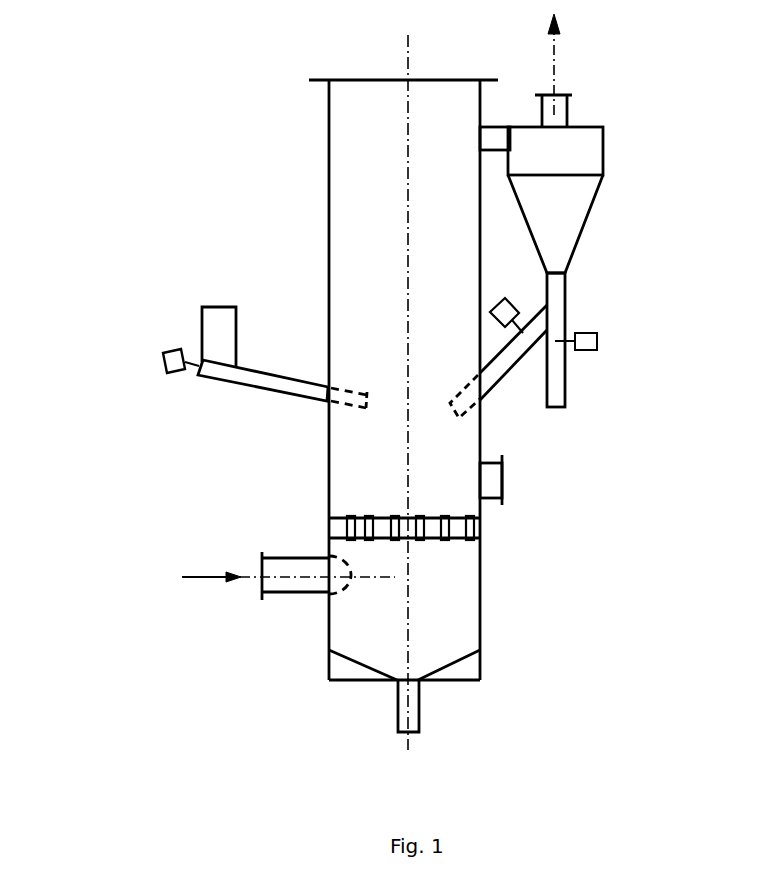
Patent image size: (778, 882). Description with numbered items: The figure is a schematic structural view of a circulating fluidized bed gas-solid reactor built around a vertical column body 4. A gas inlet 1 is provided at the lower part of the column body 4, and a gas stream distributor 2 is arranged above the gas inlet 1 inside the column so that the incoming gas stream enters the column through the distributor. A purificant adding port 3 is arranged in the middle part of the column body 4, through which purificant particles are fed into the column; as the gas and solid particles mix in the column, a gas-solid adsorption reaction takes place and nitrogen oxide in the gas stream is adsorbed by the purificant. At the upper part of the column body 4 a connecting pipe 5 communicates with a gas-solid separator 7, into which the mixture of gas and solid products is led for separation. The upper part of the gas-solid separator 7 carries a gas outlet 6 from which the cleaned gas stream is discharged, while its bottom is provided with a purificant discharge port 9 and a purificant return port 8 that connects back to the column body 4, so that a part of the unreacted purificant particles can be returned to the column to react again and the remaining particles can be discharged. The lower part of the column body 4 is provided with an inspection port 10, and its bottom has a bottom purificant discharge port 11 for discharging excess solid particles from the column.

The gas inlet 1 is at (273, 568).
The gas stream distributor 2 is at (370, 528).
The purificant adding port 3 is at (213, 332).
The column body 4 is at (382, 303).
The connecting pipe 5 is at (492, 137).
The gas outlet 6 is at (554, 112).
The gas-solid separator 7 is at (553, 210).
The purificant return port 8 is at (515, 345).
The purificant discharge port 9 is at (555, 388).
The inspection port 10 is at (498, 482).
The bottom purificant discharge port 11 is at (405, 720).